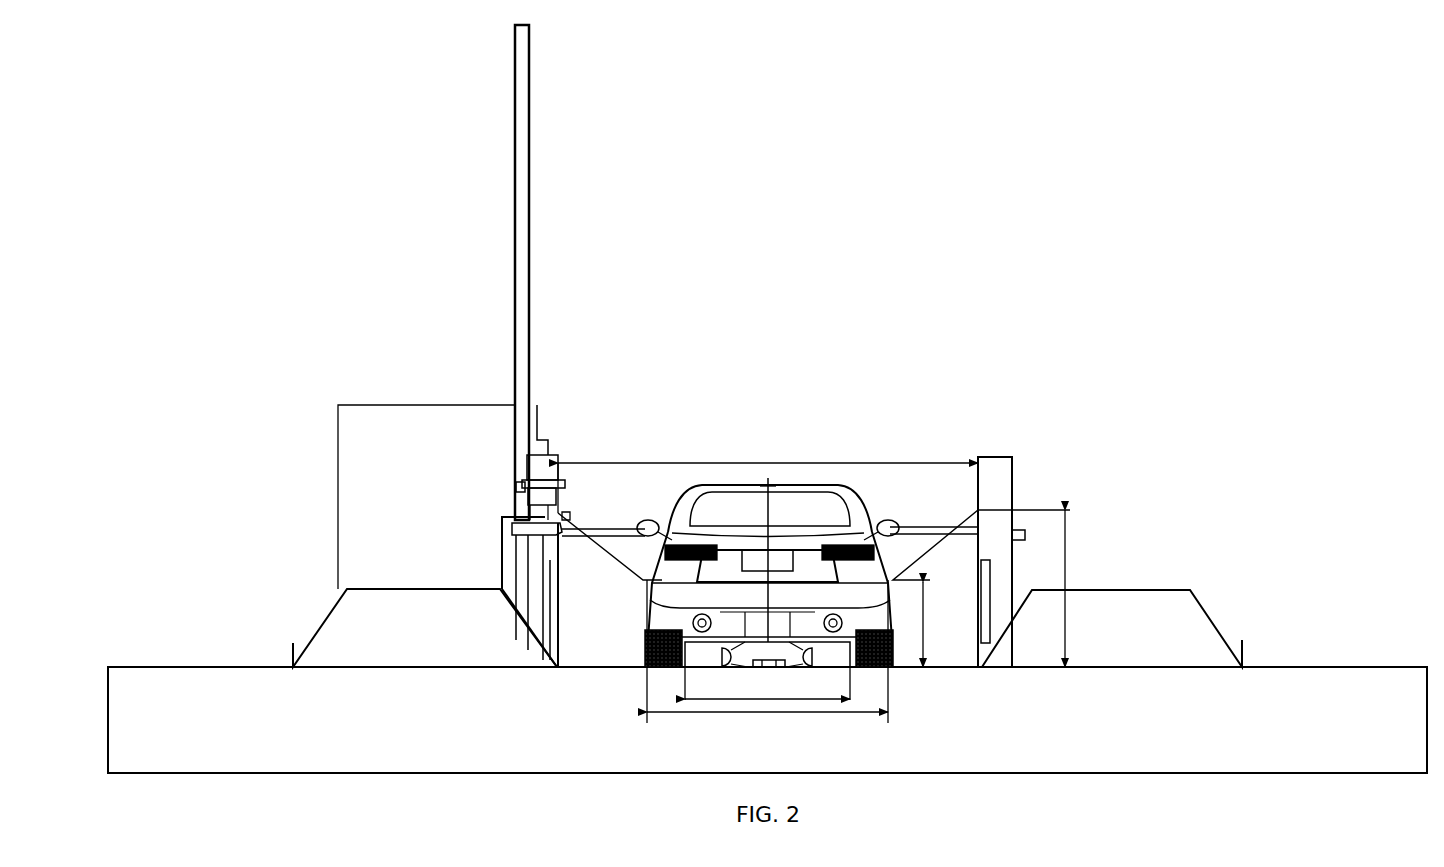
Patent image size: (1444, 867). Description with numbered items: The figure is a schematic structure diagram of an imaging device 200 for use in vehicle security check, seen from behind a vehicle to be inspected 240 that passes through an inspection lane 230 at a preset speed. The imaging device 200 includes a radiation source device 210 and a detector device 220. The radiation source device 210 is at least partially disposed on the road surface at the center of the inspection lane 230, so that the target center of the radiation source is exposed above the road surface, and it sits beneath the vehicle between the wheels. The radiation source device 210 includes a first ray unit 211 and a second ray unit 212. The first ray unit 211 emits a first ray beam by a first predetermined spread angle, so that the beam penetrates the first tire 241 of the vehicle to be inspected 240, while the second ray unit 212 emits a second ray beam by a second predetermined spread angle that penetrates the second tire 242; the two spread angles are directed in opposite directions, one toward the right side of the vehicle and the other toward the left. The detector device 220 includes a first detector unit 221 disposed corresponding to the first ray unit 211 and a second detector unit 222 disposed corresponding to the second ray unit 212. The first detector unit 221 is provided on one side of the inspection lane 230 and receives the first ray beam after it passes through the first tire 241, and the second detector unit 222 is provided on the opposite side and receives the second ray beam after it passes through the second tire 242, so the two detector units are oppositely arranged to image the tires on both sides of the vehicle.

The imaging device 200 is at (366, 365).
The radiation source device 210 is at (772, 670).
The first ray unit 211 is at (725, 668).
The second ray unit 212 is at (810, 668).
The detector device 220 is at (562, 462).
The first detector unit 221 is at (555, 628).
The second detector unit 222 is at (981, 604).
The inspection lane 230 is at (862, 437).
The vehicle to be inspected 240 is at (796, 486).
The first tire 241 is at (647, 633).
The second tire 242 is at (888, 644).